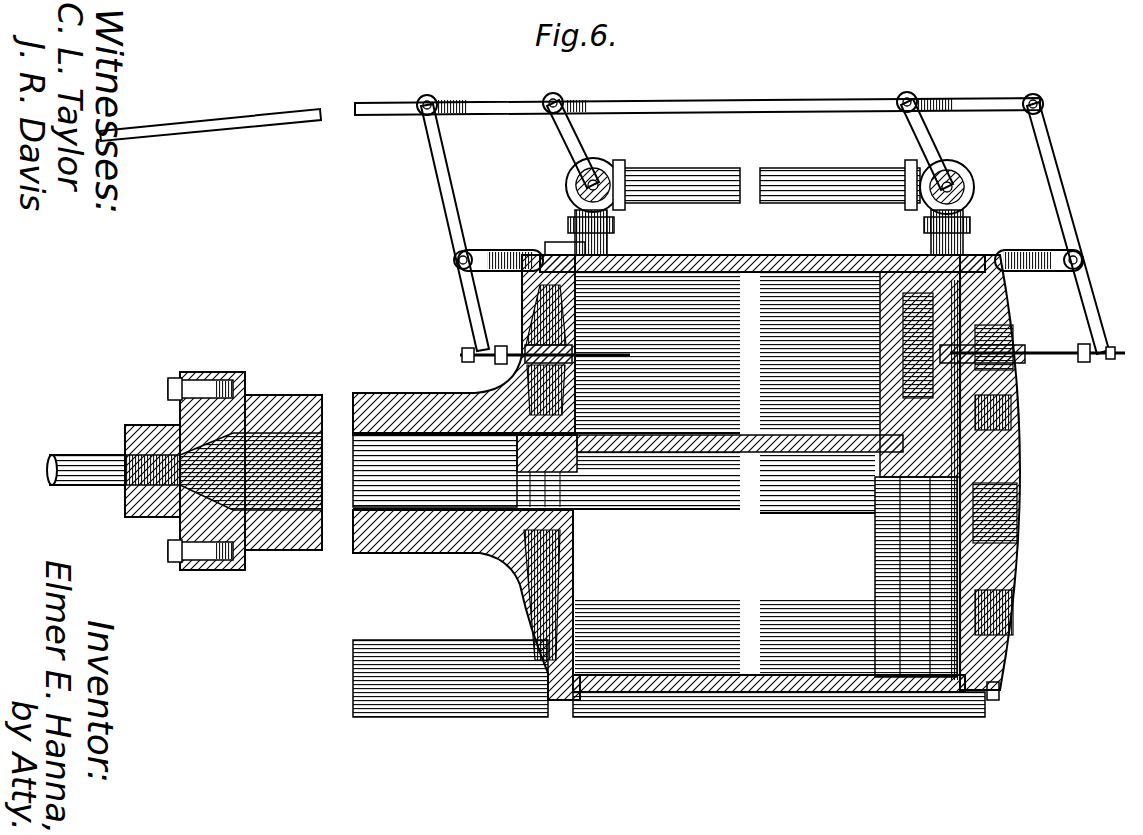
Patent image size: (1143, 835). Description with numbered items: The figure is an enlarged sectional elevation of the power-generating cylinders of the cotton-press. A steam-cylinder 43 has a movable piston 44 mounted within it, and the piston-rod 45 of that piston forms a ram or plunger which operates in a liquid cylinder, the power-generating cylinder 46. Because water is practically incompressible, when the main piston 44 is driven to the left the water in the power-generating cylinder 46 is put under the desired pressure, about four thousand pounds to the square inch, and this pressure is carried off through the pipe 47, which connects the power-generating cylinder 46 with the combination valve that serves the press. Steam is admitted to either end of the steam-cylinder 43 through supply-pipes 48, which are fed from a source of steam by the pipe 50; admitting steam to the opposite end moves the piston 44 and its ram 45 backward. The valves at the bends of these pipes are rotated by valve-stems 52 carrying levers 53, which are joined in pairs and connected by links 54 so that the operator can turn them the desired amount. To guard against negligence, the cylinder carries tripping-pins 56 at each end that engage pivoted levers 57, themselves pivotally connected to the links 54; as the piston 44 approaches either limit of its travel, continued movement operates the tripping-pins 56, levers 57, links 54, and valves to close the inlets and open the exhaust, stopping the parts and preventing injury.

The steam-cylinder 43 is at (722, 256).
The piston 44 is at (916, 577).
The piston-rod 45 is at (694, 434).
The power-generating cylinder 46 is at (414, 397).
The pipe 47 is at (80, 456).
The supply-pipe 48 is at (574, 212).
The pipe 50 is at (784, 172).
The valve-stem 52 is at (603, 172).
The lever 53 is at (562, 139).
The link 54 is at (262, 121).
The tripping-pin 56 is at (614, 360).
The pivoted lever 57 is at (446, 190).